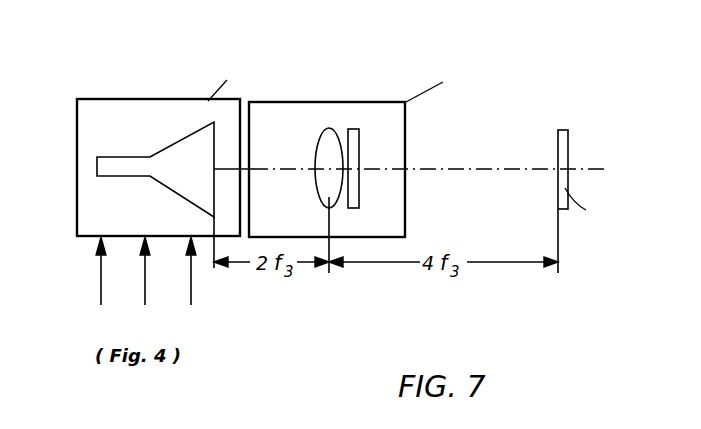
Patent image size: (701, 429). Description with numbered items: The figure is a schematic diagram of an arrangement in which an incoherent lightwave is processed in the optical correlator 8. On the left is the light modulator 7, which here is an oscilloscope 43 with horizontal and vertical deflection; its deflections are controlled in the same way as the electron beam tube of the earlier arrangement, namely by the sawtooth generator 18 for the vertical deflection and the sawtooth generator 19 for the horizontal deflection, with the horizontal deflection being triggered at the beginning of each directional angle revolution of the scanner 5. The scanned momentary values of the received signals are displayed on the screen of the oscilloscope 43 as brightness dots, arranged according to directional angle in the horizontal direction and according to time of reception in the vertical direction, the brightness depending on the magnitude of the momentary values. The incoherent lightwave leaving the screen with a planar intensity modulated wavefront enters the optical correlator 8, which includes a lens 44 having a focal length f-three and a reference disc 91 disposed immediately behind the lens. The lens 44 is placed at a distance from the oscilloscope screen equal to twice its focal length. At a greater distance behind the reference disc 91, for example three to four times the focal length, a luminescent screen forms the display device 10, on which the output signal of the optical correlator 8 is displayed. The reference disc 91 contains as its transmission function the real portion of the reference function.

The light modulator device 7 is at (126, 101).
The oscilloscope 43 is at (112, 163).
The optical correlator 8 is at (338, 108).
The lens 44 is at (320, 158).
The reference disc 91 is at (355, 157).
The display device 10 is at (565, 160).
The scanner 5 is at (100, 286).
The sawtooth generator for vertical deflection 18 is at (146, 286).
The sawtooth generator for horizontal deflection 19 is at (194, 286).